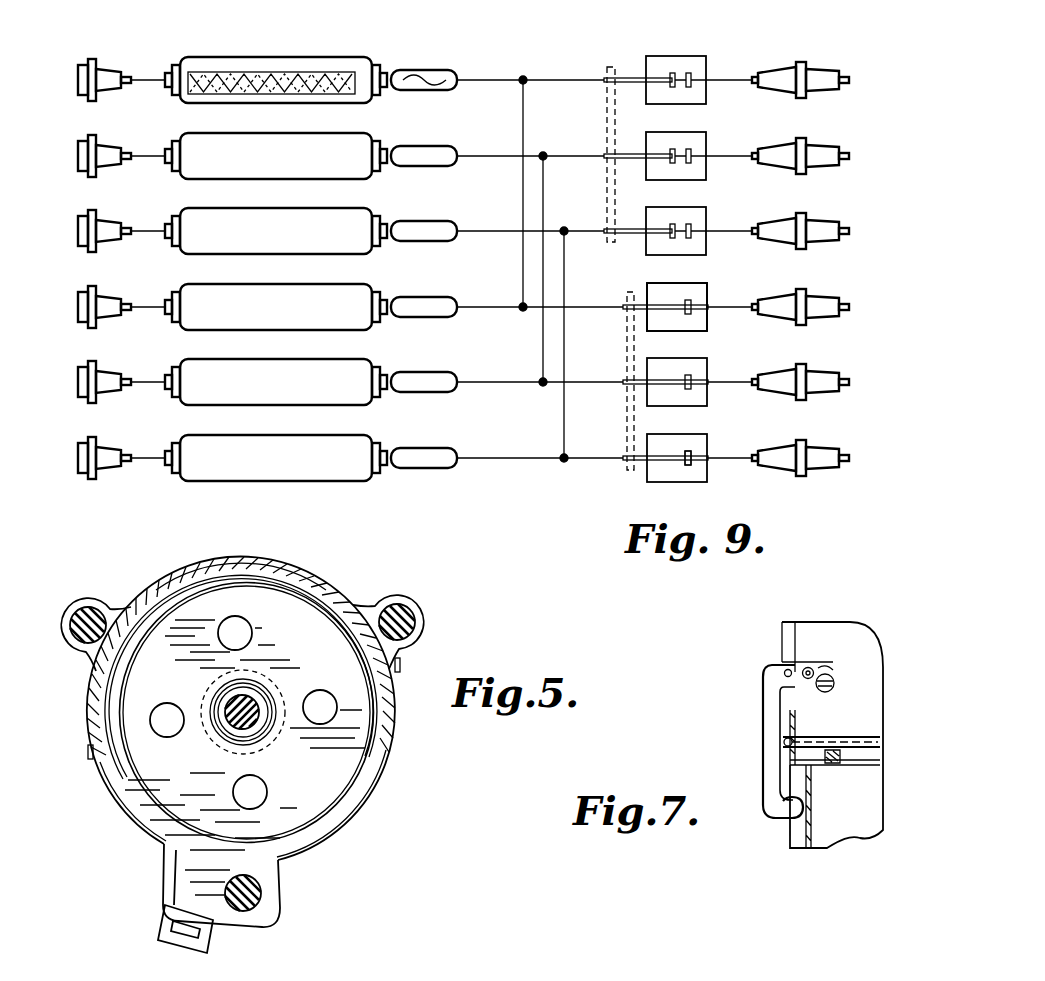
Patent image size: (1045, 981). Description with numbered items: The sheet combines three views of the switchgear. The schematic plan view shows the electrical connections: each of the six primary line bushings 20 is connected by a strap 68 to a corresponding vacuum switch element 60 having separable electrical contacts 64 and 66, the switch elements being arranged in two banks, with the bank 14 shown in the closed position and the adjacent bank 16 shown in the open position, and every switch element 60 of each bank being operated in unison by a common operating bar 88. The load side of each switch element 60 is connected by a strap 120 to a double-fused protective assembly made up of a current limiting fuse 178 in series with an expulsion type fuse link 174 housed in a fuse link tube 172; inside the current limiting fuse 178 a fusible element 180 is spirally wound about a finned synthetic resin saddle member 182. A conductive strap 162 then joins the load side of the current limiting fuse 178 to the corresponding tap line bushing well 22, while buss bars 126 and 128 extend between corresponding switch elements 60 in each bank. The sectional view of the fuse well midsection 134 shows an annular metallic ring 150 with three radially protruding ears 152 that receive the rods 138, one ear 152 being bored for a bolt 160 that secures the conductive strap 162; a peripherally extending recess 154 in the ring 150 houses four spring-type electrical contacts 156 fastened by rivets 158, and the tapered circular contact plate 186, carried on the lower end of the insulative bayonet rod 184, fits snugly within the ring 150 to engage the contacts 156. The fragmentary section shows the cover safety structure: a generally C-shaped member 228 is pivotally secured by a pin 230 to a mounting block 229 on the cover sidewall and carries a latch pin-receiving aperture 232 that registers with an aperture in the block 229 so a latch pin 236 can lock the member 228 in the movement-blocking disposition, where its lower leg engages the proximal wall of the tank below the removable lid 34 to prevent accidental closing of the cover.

In FIG. 9, the tap line bushing well 22 is at (72, 74).
In FIG. 9, the conductive strap 162 is at (140, 78).
In FIG. 5, the conductive strap 162 is at (208, 946).
In FIG. 9, the current limiting fuse 178 is at (322, 59).
In FIG. 9, the fusible element 180 is at (245, 72).
In FIG. 9, the saddle member 182 is at (262, 94).
In FIG. 9, the expulsion type fuse link 174 is at (425, 71).
In FIG. 9, the fuse link tube 172 is at (433, 451).
In FIG. 9, the strap 120 is at (492, 82).
In FIG. 9, the buss bar 126 is at (522, 186).
In FIG. 9, the buss bar 128 is at (544, 211).
In FIG. 9, the common operating bar 88 is at (607, 118).
In FIG. 9, the bank of switch elements 16 is at (632, 53).
In FIG. 9, the separable electrical contact 66 is at (674, 462).
In FIG. 9, the separable electrical contact 64 is at (700, 463).
In FIG. 9, the vacuum switch element 60 is at (668, 54).
In FIG. 9, the bank of switch elements 14 is at (720, 290).
In FIG. 9, the strap 68 is at (728, 78).
In FIG. 9, the primary line bushing 20 is at (846, 67).
In FIG. 5, the midsection 134 is at (322, 573).
In FIG. 5, the peripherally extending recess 154 is at (235, 568).
In FIG. 5, the spring-type electrical contact 156 is at (163, 606).
In FIG. 5, the annular metallic ring 150 is at (362, 805).
In FIG. 5, the ear 152 is at (86, 601).
In FIG. 5, the rod 138 is at (72, 633).
In FIG. 5, the rivet 158 is at (400, 665).
In FIG. 5, the insulative rod 184 is at (258, 703).
In FIG. 5, the circular contact plate 186 is at (145, 775).
In FIG. 5, the bolt 160 is at (168, 925).
In FIG. 7, the removable lid 34 is at (868, 737).
In FIG. 7, the C-shaped member 228 is at (760, 729).
In FIG. 7, the latch pin-receiving aperture 232 is at (786, 669).
In FIG. 7, the pin 230 is at (808, 667).
In FIG. 7, the mounting block 229 is at (826, 667).
In FIG. 7, the latch pin 236 is at (835, 678).